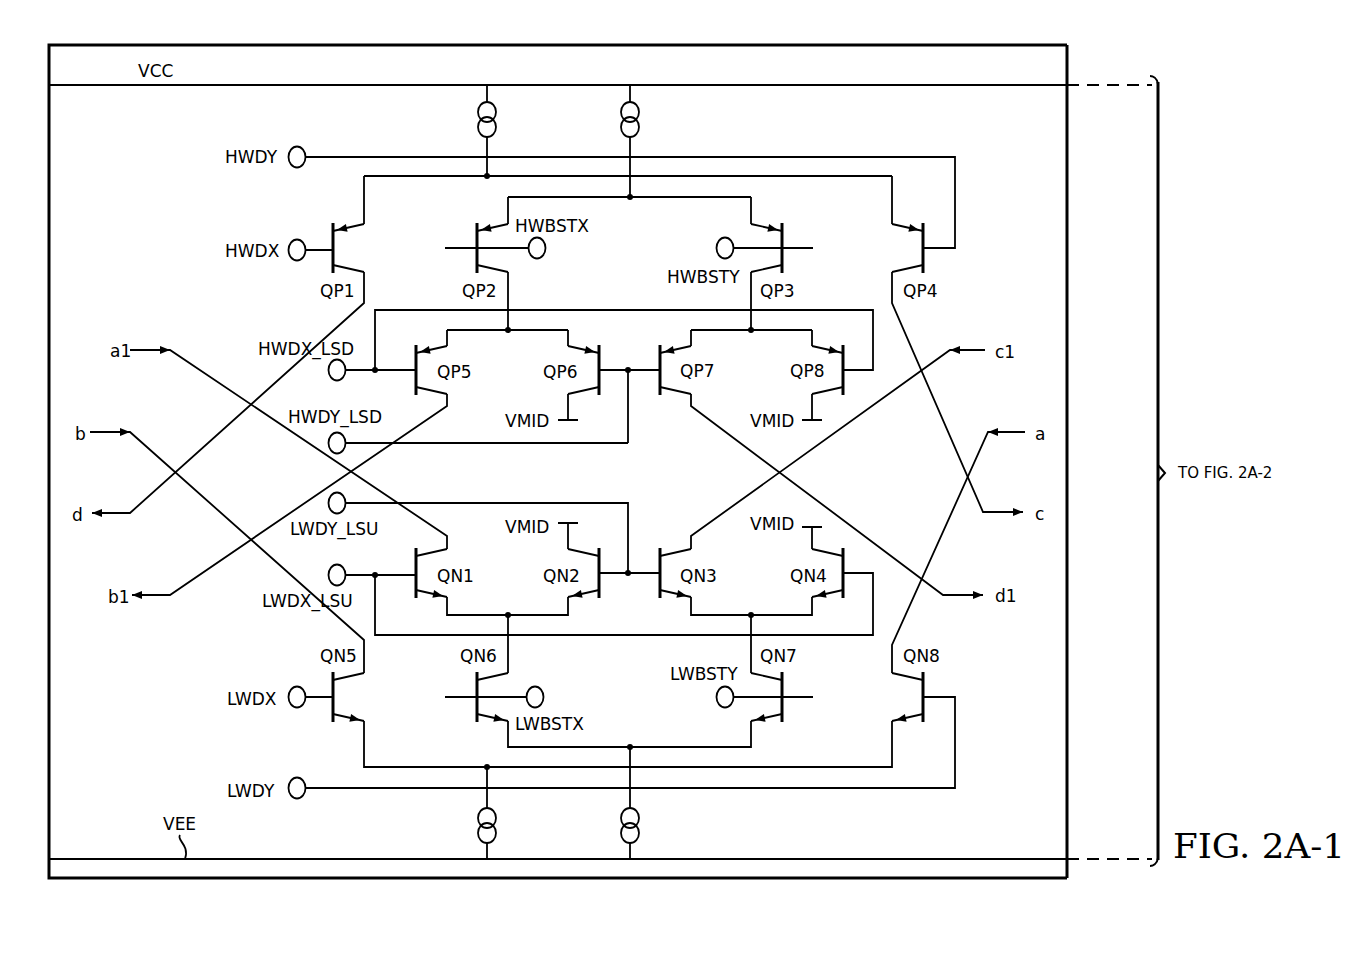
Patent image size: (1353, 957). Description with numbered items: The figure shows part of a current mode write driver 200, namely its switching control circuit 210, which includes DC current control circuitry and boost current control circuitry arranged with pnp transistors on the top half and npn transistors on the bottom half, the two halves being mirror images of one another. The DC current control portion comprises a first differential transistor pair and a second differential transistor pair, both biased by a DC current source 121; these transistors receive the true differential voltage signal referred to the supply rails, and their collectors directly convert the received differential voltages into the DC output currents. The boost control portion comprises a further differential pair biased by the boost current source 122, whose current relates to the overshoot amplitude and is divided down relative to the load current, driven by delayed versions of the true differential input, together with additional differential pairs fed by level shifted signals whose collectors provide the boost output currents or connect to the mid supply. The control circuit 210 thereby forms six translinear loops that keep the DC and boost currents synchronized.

The DC current source 121 is at (477, 117).
The boost current source 122 is at (640, 117).
The current mode write driver 200 is at (1240, 130).
The switching control circuit 210 is at (1067, 401).